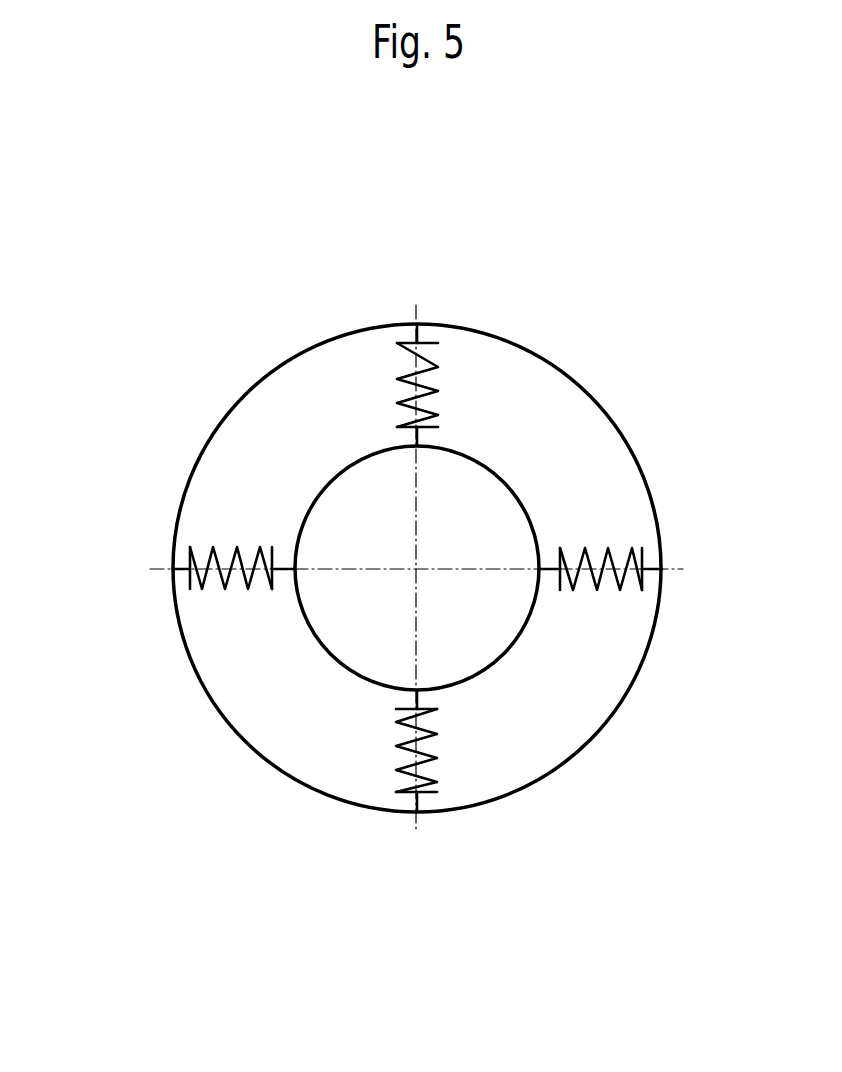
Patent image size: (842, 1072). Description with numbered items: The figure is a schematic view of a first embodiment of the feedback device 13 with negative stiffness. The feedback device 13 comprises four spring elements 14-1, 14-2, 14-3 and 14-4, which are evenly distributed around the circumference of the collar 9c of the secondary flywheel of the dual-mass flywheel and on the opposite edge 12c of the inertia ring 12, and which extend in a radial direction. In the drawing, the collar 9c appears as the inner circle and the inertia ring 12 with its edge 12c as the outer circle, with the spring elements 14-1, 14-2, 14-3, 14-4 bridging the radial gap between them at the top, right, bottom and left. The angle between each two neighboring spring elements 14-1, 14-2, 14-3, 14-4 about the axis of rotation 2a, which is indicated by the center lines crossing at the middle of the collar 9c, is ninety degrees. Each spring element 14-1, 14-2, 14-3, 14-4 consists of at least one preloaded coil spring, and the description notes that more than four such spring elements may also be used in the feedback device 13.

The feedback device 13 is at (301, 313).
The inertia ring 12 is at (530, 348).
The edge of the inertia ring 12c is at (417, 568).
The collar 9c is at (490, 515).
The axis of rotation 2a is at (417, 569).
The spring element 14-1 is at (437, 370).
The spring element 14-2 is at (608, 550).
The spring element 14-3 is at (430, 792).
The spring element 14-4 is at (227, 588).